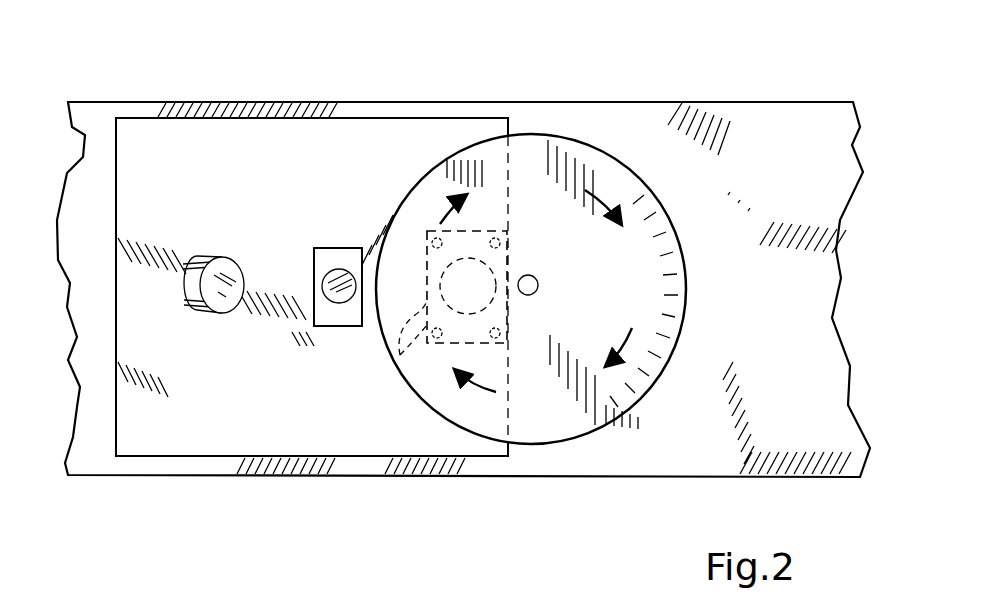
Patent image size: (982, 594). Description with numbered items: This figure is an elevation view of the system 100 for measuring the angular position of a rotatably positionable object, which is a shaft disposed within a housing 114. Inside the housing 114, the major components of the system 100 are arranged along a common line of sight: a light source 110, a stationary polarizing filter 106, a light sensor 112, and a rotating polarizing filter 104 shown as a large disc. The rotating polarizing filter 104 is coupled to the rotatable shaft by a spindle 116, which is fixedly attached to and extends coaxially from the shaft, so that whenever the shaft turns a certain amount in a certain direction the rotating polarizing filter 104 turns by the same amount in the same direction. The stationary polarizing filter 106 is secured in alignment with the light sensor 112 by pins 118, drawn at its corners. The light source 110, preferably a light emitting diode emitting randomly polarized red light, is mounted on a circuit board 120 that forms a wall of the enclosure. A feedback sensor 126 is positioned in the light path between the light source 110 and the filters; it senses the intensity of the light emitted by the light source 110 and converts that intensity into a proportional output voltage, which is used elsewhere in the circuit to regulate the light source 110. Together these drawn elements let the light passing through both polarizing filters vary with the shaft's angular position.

The system 100 is at (136, 86).
The rotating polarizing filter 104 is at (628, 170).
The stationary polarizing filter 106 is at (427, 262).
The light source 110 is at (212, 259).
The light sensor 112 is at (400, 355).
The housing 114 is at (512, 102).
The spindle 116 is at (538, 287).
The pins 118 is at (440, 238).
The circuit board 120 is at (255, 115).
The feedback sensor 126 is at (326, 248).